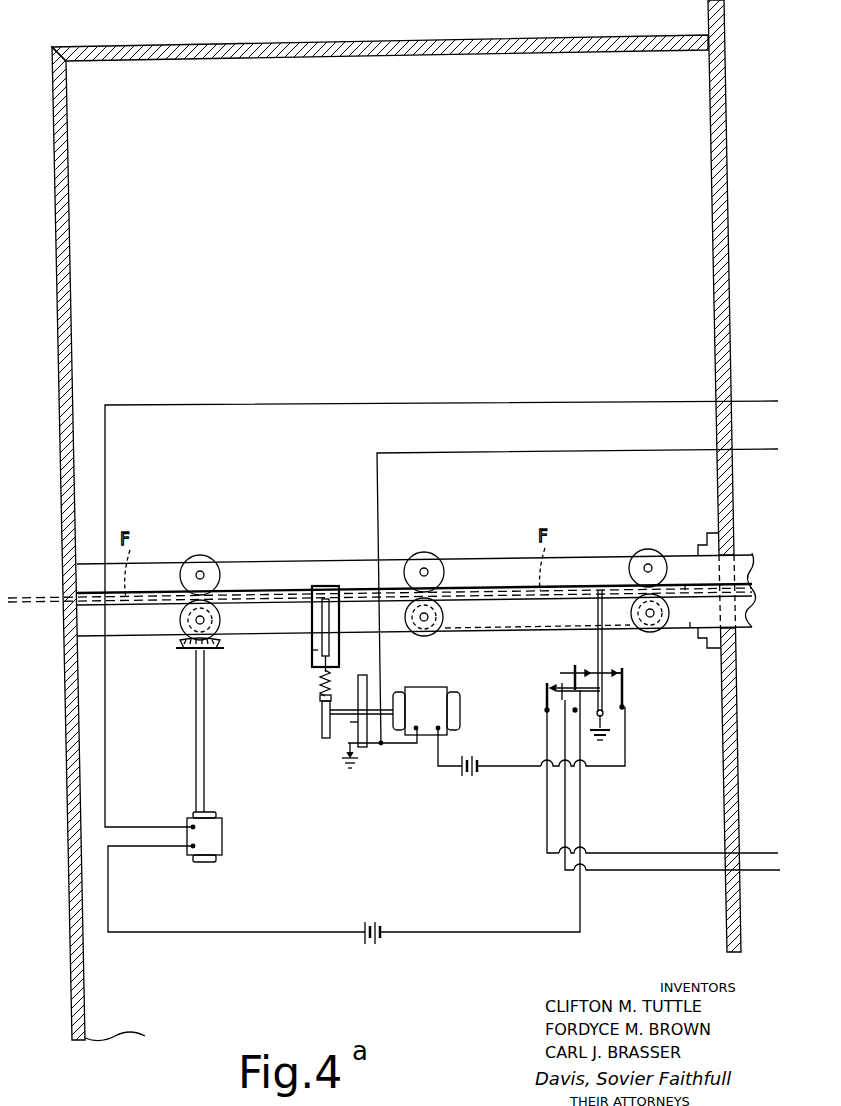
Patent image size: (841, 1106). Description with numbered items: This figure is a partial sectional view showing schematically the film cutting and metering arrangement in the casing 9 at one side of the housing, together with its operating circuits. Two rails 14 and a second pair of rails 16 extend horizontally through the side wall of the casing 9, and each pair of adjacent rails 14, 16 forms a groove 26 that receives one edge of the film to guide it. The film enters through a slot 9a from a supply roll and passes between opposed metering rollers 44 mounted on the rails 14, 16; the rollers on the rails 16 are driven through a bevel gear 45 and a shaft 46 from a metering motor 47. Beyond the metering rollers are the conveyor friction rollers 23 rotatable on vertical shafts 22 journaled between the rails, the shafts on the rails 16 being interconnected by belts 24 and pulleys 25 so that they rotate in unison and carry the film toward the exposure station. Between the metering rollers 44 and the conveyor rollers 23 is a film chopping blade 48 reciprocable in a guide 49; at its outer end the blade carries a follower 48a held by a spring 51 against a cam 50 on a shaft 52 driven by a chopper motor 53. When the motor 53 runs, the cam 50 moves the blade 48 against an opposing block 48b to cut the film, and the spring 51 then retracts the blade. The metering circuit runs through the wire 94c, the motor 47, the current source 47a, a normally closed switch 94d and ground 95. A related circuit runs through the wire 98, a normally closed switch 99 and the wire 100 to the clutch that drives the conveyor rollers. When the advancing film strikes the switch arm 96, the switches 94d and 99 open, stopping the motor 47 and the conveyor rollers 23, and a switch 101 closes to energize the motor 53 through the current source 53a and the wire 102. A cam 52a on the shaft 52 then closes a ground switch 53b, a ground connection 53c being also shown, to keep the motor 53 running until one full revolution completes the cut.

The casing 9 is at (216, 42).
The slot 9a is at (60, 598).
The rails 14 is at (350, 566).
The rails 16 is at (362, 620).
The vertical shafts 22 is at (430, 571).
The friction rollers 23 is at (424, 556).
The belts 24 is at (690, 622).
The pulleys 25 is at (650, 633).
The groove 26 is at (685, 590).
The metering rollers 44 is at (205, 562).
The bevel gear 45 is at (190, 651).
The shaft 46 is at (205, 745).
The metering motor 47 is at (214, 843).
The current source 47a is at (372, 945).
The film chopping blade 48 is at (312, 618).
The follower 48a is at (320, 700).
The opposing block 48b is at (318, 586).
The guide 49 is at (312, 650).
The cam 50 is at (322, 725).
The spring 51 is at (320, 683).
The shaft 52 is at (384, 710).
The cam 52a is at (356, 722).
The chopper motor 53 is at (434, 715).
The current source 53a is at (468, 780).
The ground switch 53b is at (360, 745).
The ground connection 53c is at (350, 770).
The wire 94c is at (745, 400).
The normally closed switch 94d is at (583, 672).
The ground 95 is at (612, 735).
The switch arm 96 is at (603, 650).
The wire 98 is at (758, 872).
The normally closed switch 99 is at (548, 691).
The wire 100 is at (760, 852).
The switch 101 is at (625, 673).
The wire 102 is at (745, 448).